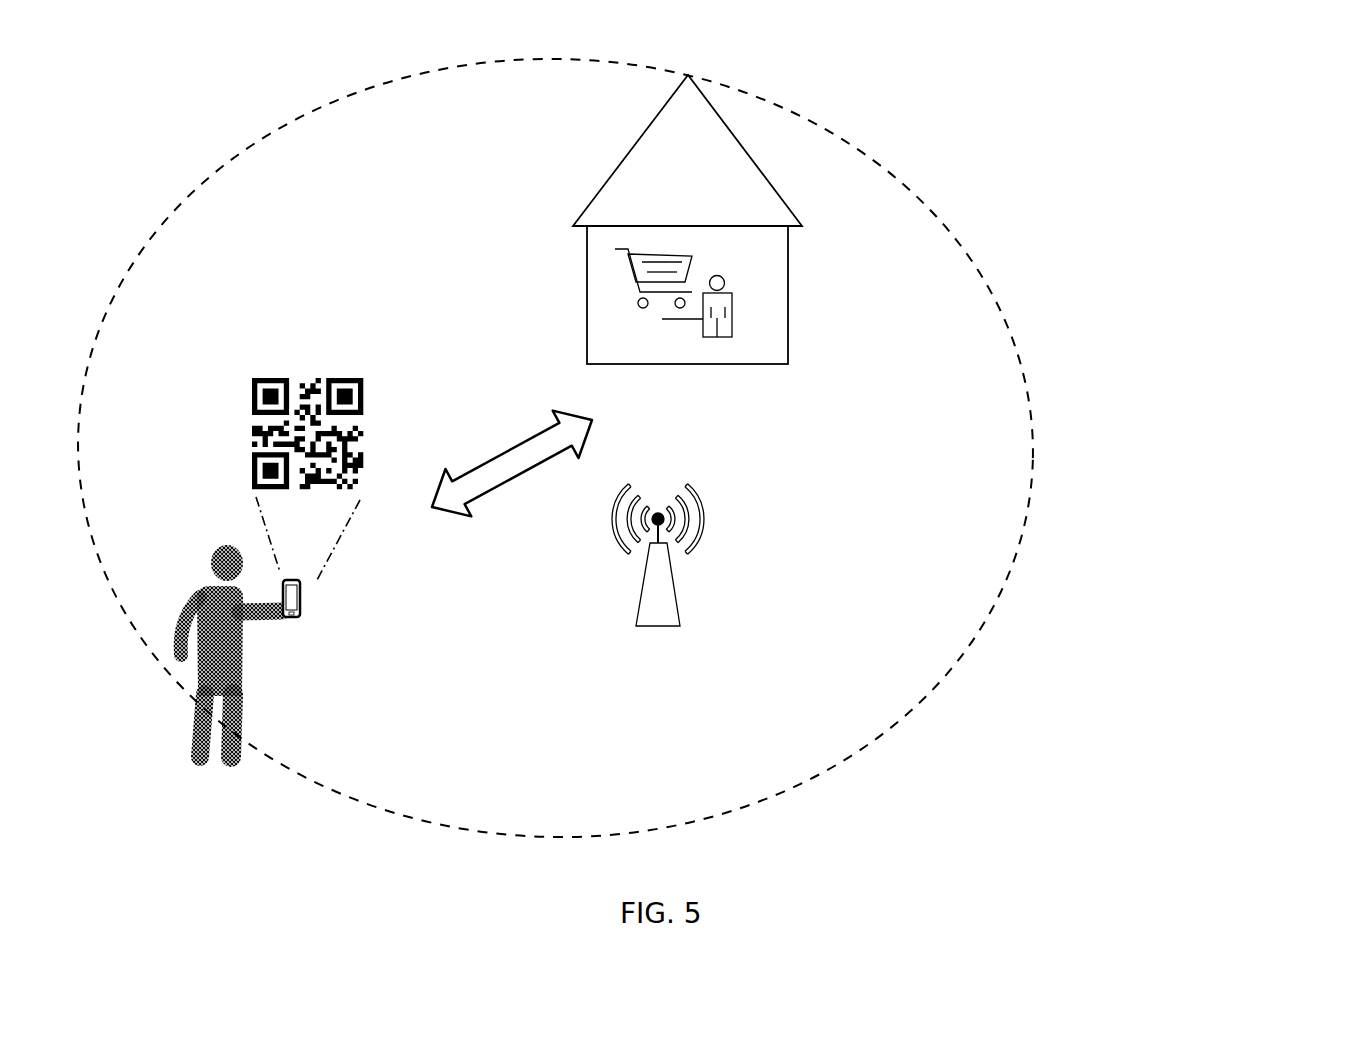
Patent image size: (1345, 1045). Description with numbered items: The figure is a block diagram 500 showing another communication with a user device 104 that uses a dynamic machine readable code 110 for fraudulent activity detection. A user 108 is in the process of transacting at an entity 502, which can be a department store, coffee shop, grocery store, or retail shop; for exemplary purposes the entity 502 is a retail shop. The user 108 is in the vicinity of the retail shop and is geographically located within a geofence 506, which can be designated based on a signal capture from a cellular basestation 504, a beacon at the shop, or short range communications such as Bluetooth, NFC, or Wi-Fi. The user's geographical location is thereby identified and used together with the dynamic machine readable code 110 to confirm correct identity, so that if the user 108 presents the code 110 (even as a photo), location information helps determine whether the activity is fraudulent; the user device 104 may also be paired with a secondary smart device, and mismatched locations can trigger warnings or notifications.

The block diagram 500 is at (1242, 96).
The entity 502 is at (782, 206).
The cellular basestation 504 is at (680, 622).
The geofence 506 is at (1010, 326).
The dynamic machine readable code 110 is at (365, 413).
The user 108 is at (233, 760).
The user device 104 is at (301, 594).